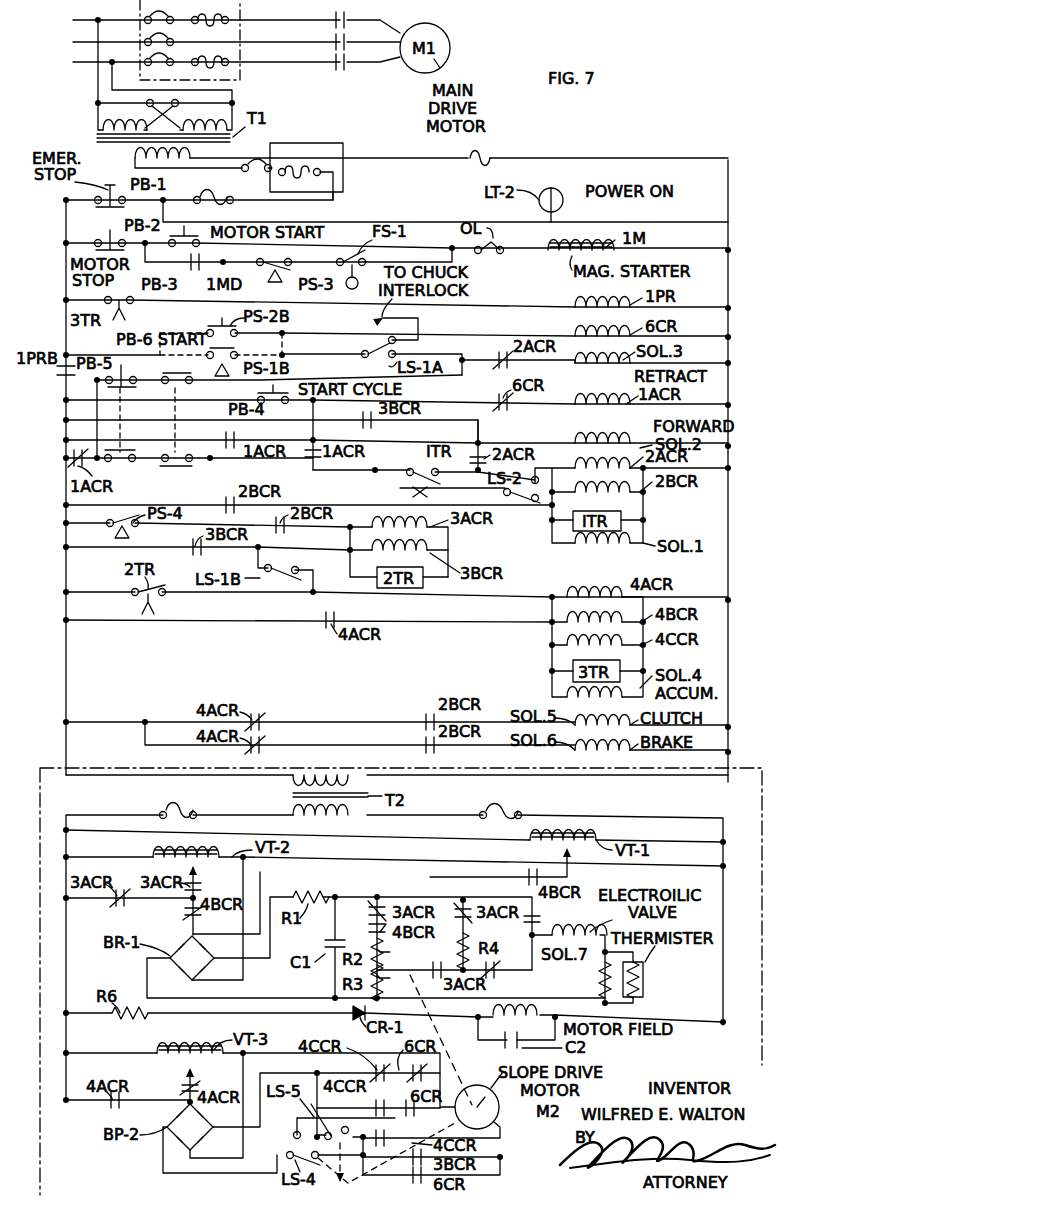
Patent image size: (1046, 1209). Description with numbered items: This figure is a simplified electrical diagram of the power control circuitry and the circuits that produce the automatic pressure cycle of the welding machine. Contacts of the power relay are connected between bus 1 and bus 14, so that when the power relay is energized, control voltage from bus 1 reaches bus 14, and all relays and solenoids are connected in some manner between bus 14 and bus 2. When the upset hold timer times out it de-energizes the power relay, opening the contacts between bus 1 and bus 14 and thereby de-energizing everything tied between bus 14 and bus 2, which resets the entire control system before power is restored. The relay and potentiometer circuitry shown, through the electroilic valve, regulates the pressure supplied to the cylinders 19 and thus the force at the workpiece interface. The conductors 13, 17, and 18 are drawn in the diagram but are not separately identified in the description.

The bus 1 is at (66, 324).
The bus 2 is at (728, 331).
The start cycle conductor 13 is at (72, 454).
The bus 14 is at (66, 398).
The conductor to limit switch LS-2 17 is at (483, 476).
The conductor 18 is at (211, 465).
The cylinders 19 is at (375, 472).